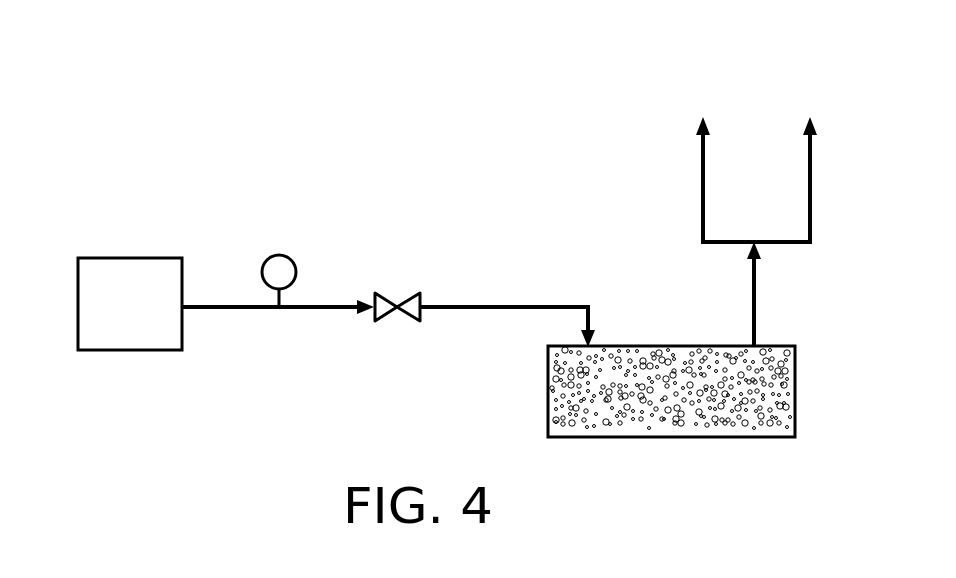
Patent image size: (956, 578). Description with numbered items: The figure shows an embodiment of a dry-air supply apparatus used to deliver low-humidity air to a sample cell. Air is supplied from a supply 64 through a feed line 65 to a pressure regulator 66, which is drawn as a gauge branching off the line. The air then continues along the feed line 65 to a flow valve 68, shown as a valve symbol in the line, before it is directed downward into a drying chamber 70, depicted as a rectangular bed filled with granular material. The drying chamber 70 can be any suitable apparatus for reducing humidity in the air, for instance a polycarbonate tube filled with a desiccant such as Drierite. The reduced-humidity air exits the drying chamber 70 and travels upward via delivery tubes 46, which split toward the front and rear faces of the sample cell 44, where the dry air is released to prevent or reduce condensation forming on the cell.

The supply 64 is at (107, 258).
The pressure regulator 66 is at (278, 254).
The feed line 65 is at (340, 310).
The flow valve 68 is at (403, 296).
The drying chamber 70 is at (665, 438).
The delivery tubes 46 is at (757, 290).
The sample cell 44 is at (690, 115).